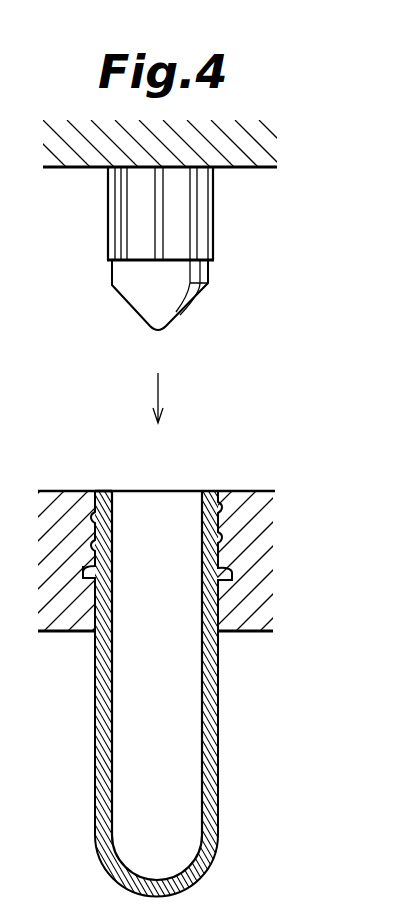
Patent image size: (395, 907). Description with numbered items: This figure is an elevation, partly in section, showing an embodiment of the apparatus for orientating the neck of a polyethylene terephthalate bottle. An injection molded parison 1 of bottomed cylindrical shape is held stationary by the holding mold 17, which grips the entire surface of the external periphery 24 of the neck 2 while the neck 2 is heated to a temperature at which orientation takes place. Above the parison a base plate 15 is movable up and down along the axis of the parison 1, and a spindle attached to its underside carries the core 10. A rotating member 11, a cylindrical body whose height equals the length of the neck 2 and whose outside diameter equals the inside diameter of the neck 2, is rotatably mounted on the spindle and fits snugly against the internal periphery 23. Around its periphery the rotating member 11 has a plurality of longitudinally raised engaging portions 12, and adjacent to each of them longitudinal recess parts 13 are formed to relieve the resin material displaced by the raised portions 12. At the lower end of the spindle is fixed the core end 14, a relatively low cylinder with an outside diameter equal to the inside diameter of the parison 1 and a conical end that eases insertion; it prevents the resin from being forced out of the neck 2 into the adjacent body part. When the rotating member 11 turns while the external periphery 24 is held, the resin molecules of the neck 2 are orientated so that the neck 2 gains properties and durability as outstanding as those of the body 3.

The parison 1 is at (197, 508).
The neck 2 is at (210, 557).
The body 3 is at (102, 743).
The core 10 is at (185, 250).
The rotating member 11 is at (203, 242).
The raised engaging portions 12 is at (123, 222).
The recess parts 13 is at (143, 247).
The core end 14 is at (208, 283).
The base plate 15 is at (258, 135).
The holding mold 17 is at (245, 508).
The internal periphery 23 is at (120, 490).
The external periphery 24 is at (93, 617).